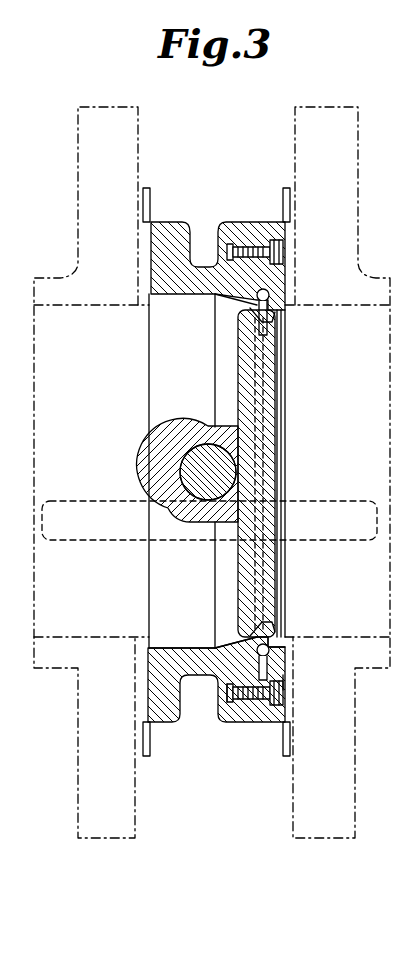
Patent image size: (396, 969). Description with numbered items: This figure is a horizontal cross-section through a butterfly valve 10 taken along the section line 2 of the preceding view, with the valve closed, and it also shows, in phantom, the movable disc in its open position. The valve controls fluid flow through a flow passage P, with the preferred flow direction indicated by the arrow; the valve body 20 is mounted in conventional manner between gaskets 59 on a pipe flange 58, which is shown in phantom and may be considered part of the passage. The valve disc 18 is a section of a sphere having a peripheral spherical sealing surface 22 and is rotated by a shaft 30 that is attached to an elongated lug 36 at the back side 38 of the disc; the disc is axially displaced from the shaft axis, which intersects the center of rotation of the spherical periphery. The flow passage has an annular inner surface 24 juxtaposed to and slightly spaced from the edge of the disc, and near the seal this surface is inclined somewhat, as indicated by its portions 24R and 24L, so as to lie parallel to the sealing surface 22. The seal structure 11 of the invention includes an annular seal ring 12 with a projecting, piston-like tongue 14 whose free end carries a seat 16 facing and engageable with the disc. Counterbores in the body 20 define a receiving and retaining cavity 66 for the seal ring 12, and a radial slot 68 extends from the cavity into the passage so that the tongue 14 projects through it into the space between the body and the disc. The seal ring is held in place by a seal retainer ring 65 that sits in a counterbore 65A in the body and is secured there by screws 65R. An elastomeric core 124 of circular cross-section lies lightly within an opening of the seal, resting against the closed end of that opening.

The slab / workpiece 2 is at (42, 518).
The butterfly valve 10 is at (246, 115).
The seal structure 11 is at (240, 311).
The annular seal ring 12 is at (283, 289).
The tongue 14 is at (262, 322).
The seat 16 is at (272, 630).
The valve disc 18 is at (280, 420).
The valve body 20 is at (163, 722).
The peripheral spherical sealing surface 22 is at (271, 654).
The annular inner surface 24 is at (170, 650).
The left portion of inner surface 24L is at (224, 648).
The right portion of inner surface 24R is at (282, 640).
The shaft 30 is at (196, 470).
The elongated lug 36 is at (178, 440).
The back side 38 is at (238, 392).
The pipe flange 58 is at (78, 130).
The gasket 59 is at (147, 186).
The seal retainer ring 65 is at (287, 680).
The counterbore 65A is at (250, 729).
The screw 65R is at (287, 250).
The receiving and retaining cavity 66 is at (212, 295).
The radial slot 68 is at (283, 450).
The elastomeric core 124 is at (270, 668).
The flow passage P is at (318, 470).